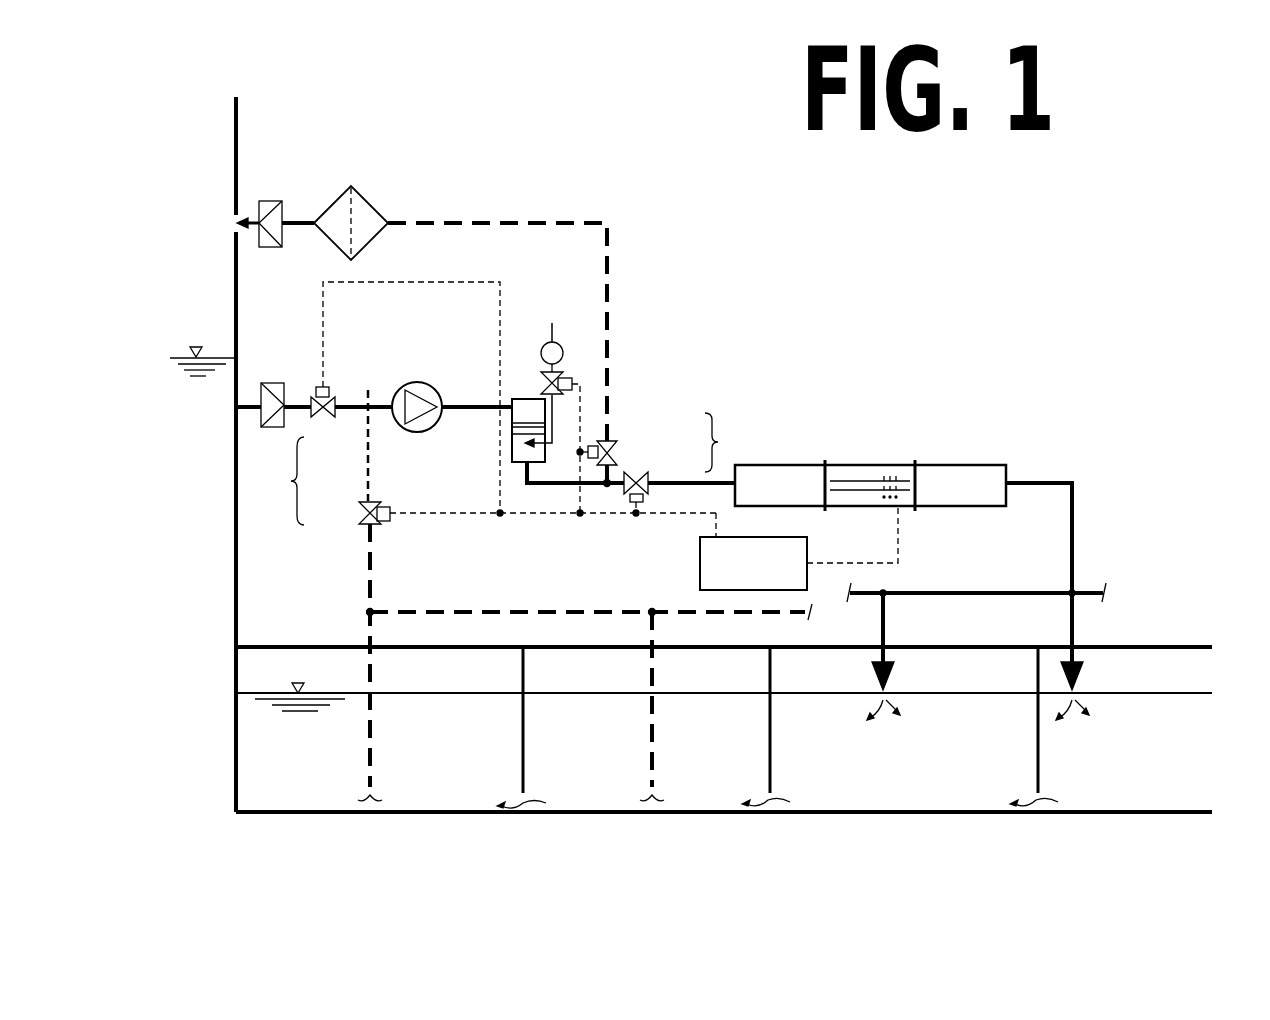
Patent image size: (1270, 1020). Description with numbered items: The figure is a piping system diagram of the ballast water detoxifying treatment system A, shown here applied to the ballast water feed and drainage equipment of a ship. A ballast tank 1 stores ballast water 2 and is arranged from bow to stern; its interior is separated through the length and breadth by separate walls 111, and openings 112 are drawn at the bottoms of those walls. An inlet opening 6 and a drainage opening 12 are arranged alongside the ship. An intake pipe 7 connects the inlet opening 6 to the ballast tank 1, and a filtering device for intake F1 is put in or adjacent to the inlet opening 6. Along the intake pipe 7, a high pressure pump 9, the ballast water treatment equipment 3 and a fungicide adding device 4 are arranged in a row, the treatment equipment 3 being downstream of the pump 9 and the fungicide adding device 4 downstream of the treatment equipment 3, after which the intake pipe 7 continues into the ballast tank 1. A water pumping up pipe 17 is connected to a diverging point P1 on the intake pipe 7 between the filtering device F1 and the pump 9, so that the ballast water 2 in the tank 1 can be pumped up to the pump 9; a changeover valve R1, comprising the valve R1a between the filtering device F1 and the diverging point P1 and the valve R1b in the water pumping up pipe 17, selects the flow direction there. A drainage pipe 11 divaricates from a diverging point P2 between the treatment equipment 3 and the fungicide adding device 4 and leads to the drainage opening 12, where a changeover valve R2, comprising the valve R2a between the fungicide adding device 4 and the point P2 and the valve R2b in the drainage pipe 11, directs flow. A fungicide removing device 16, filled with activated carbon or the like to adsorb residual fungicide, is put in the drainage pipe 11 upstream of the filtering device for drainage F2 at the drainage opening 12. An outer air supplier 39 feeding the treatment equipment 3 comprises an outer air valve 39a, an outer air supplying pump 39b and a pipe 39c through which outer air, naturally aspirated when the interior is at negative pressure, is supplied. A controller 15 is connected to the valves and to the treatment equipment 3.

The ballast tank 1 is at (260, 781).
The ballast water 2 is at (275, 690).
The ballast water treatment equipment 3 is at (540, 454).
The fungicide adding device 4 is at (860, 464).
The inlet opening 6 is at (233, 408).
The intake pipe 7 is at (292, 405).
The high pressure pump 9 is at (421, 434).
The drainage pipe 11 is at (479, 218).
The drainage opening 12 is at (233, 223).
The controller 15 is at (700, 563).
The fungicide removing device 16 is at (368, 198).
The water pumping up pipe 17 is at (372, 557).
The outer air supplier 39 is at (567, 394).
The outer air valve 39a is at (568, 377).
The outer air supplying pump 39b is at (562, 345).
The pipe 39c is at (551, 337).
The separate walls 111 is at (527, 744).
The flow passage opening 112 is at (530, 800).
The ballast water detoxifying treatment system A is at (700, 240).
The filtering device for intake F1 is at (270, 381).
The filtering device for drainage F2 is at (268, 200).
The diverging point P1 is at (369, 433).
The diverging point P2 is at (607, 487).
The changeover valve R1 is at (283, 481).
The valve R1a is at (327, 419).
The valve R1b is at (359, 513).
The changeover valve R2 is at (726, 442).
The valve R2a is at (647, 481).
The valve R2b is at (613, 447).